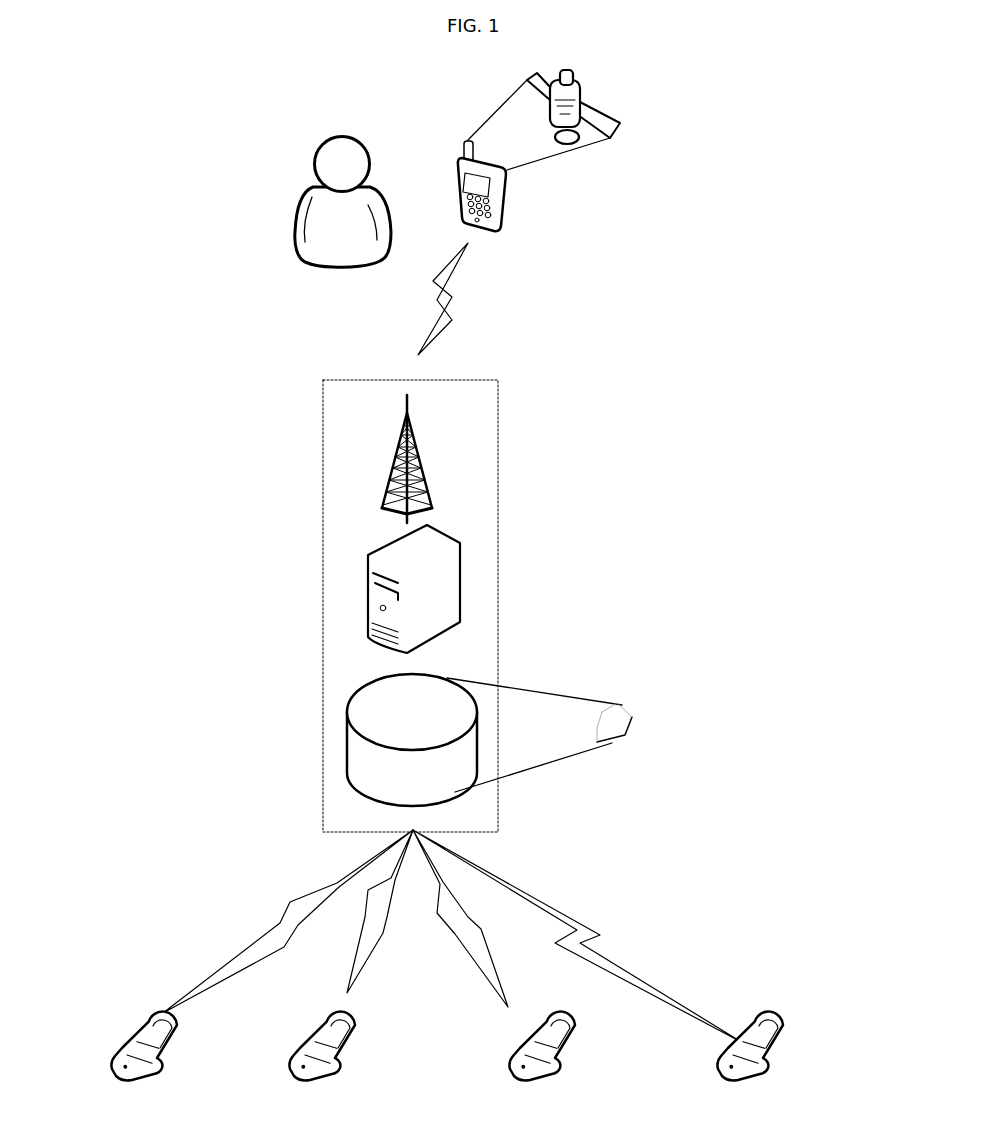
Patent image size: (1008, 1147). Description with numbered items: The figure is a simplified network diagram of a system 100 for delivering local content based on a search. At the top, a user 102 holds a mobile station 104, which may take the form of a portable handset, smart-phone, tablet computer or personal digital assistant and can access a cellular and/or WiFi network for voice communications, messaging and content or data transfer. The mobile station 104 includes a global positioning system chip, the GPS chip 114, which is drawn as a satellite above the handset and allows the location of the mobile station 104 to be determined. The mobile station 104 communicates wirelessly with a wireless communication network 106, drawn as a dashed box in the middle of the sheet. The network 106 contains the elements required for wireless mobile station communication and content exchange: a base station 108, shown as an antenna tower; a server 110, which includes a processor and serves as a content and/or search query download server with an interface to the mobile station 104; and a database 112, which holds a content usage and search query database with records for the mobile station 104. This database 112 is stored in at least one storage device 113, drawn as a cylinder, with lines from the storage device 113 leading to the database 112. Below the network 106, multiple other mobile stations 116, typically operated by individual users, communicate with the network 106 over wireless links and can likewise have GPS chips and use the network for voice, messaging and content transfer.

The system 100 is at (158, 78).
The user 102 is at (287, 207).
The mobile station 104 is at (508, 190).
The wireless communication network 106 is at (500, 605).
The base station 108 is at (400, 443).
The server 110 is at (367, 605).
The database 112 is at (635, 710).
The storage device 113 is at (347, 731).
The GPS chip 114 is at (570, 70).
The other mobile stations 116 is at (422, 1057).